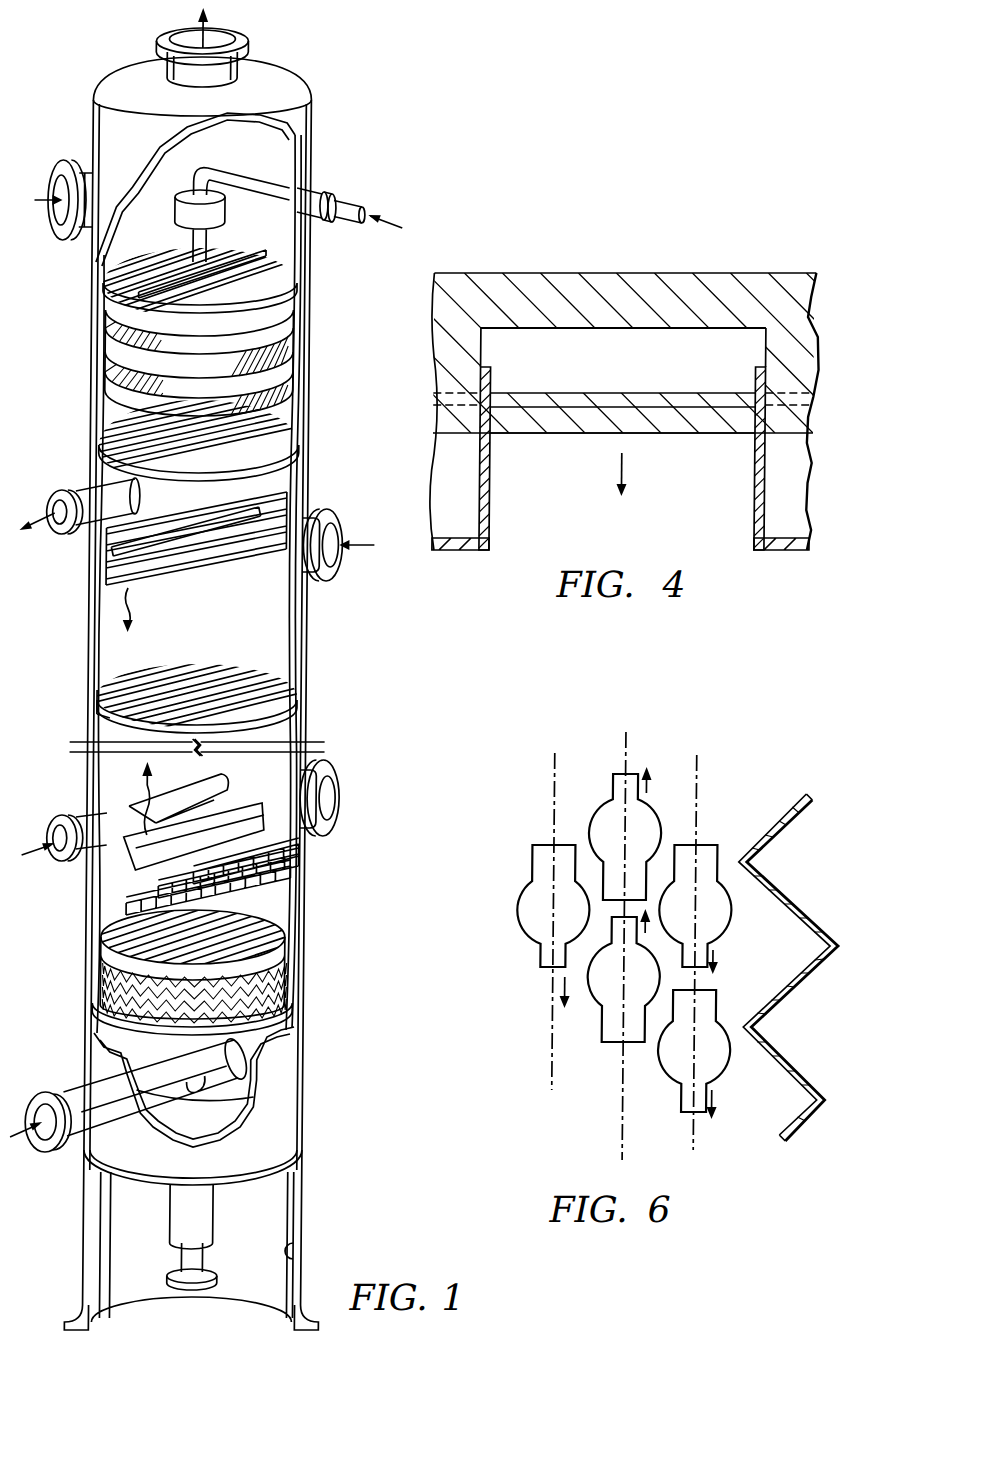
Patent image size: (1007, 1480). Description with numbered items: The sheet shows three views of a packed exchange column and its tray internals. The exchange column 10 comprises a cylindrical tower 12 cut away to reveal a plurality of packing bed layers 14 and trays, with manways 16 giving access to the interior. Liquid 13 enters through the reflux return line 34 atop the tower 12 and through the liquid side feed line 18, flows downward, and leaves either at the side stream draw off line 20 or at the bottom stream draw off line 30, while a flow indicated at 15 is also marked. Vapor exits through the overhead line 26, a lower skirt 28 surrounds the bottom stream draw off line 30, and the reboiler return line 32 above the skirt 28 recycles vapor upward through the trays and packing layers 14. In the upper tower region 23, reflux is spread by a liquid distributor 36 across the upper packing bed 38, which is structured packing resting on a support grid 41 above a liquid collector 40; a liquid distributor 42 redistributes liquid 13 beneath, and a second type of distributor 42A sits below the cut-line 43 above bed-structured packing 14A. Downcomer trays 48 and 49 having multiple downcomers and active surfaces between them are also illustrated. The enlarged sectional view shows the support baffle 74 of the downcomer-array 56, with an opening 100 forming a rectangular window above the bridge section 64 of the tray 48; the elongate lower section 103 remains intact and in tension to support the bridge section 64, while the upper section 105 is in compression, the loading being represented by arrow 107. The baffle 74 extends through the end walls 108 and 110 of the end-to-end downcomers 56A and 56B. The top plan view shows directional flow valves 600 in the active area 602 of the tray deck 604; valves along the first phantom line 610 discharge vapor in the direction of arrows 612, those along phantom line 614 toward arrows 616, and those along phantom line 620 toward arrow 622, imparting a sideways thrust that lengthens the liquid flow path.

In FIG. 1, the exchange column 10 is at (314, 68).
In FIG. 1, the cylindrical tower 12 is at (308, 118).
In FIG. 1, the liquid 13 is at (396, 227).
In FIG. 1, the packing bed layers 14 is at (300, 325).
In FIG. 1, the bed-structured packing 14A is at (291, 966).
In FIG. 1, the liquid flow 15 is at (200, 18).
In FIG. 1, the manways 16 is at (58, 172).
In FIG. 1, the liquid side feed line 18 is at (50, 826).
In FIG. 1, the side stream draw off line 20 is at (78, 491).
In FIG. 1, the upper tower region 23 is at (104, 350).
In FIG. 1, the overhead line 26 is at (246, 42).
In FIG. 1, the lower skirt 28 is at (304, 1253).
In FIG. 1, the bottom stream draw off line 30 is at (206, 1199).
In FIG. 1, the reboiler return line 32 is at (72, 1096).
In FIG. 1, the reflux return line 34 is at (323, 192).
In FIG. 1, the liquid distributor 36 is at (104, 277).
In FIG. 1, the upper packing bed 38 is at (104, 306).
In FIG. 1, the liquid collector 40 is at (292, 434).
In FIG. 1, the support grid 41 is at (293, 382).
In FIG. 1, the liquid distributor 42 is at (108, 567).
In FIG. 1, the distributor 42A is at (290, 879).
In FIG. 1, the cut-line 43 is at (326, 742).
In FIG. 1, the downcomer tray 48 is at (276, 639).
In FIG. 4, the downcomer tray 48 is at (633, 380).
In FIG. 1, the downcomer tray 49 is at (90, 703).
In FIG. 4, the downcomer-array 56 is at (806, 476).
In FIG. 4, the downcomer 56A is at (760, 553).
In FIG. 4, the downcomer 56B is at (477, 553).
In FIG. 4, the bridge section 64 is at (567, 393).
In FIG. 4, the support baffle 74 is at (716, 282).
In FIG. 4, the opening 100 is at (723, 378).
In FIG. 4, the lower section 103 is at (583, 437).
In FIG. 4, the upper section 105 is at (517, 282).
In FIG. 4, the arrow 107 is at (625, 468).
In FIG. 4, the end wall 108 is at (753, 507).
In FIG. 4, the end wall 110 is at (490, 508).
In FIG. 6, the flow valves 600 is at (596, 795).
In FIG. 6, the active area 602 is at (603, 1155).
In FIG. 6, the tray deck 604 is at (715, 830).
In FIG. 6, the first phantom line 610 is at (702, 763).
In FIG. 6, the arrows 612 is at (720, 966).
In FIG. 6, the phantom line 614 is at (628, 740).
In FIG. 6, the arrows 616 is at (648, 796).
In FIG. 6, the phantom line 620 is at (548, 1030).
In FIG. 6, the arrow 622 is at (562, 982).